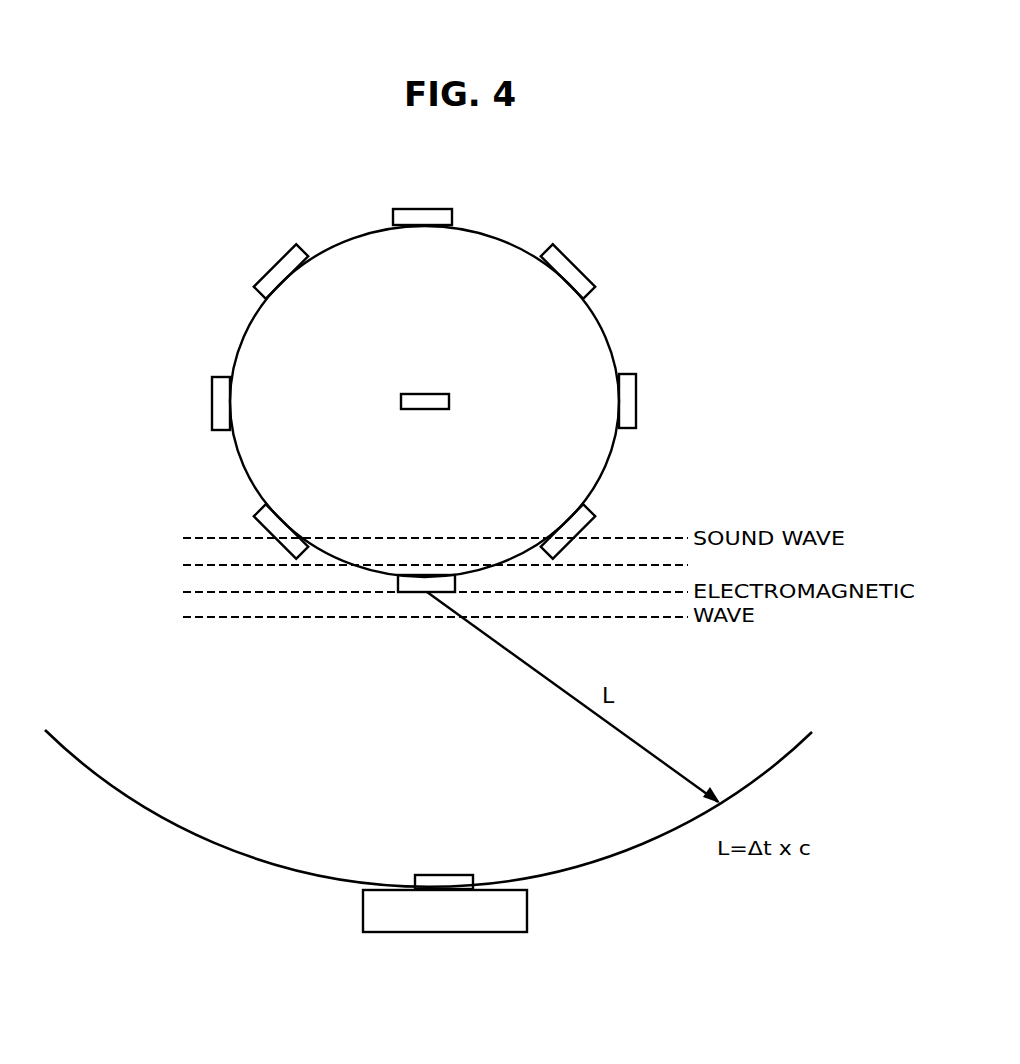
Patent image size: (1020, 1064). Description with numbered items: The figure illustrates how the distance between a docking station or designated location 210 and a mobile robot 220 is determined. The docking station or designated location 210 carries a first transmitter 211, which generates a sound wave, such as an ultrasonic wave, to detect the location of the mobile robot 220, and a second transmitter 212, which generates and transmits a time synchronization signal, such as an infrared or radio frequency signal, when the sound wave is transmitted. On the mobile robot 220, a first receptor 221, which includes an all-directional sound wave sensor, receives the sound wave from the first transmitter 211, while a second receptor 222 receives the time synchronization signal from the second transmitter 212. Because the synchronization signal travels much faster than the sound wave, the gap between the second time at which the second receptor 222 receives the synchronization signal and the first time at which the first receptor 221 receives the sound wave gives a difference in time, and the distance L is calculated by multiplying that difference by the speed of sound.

The docking station or designated location 210 is at (451, 943).
The first transmitter 211 is at (527, 910).
The second transmitter 212 is at (445, 875).
The mobile robot 220 is at (641, 303).
The first receptor 221 is at (273, 263).
The second receptor 222 is at (420, 410).